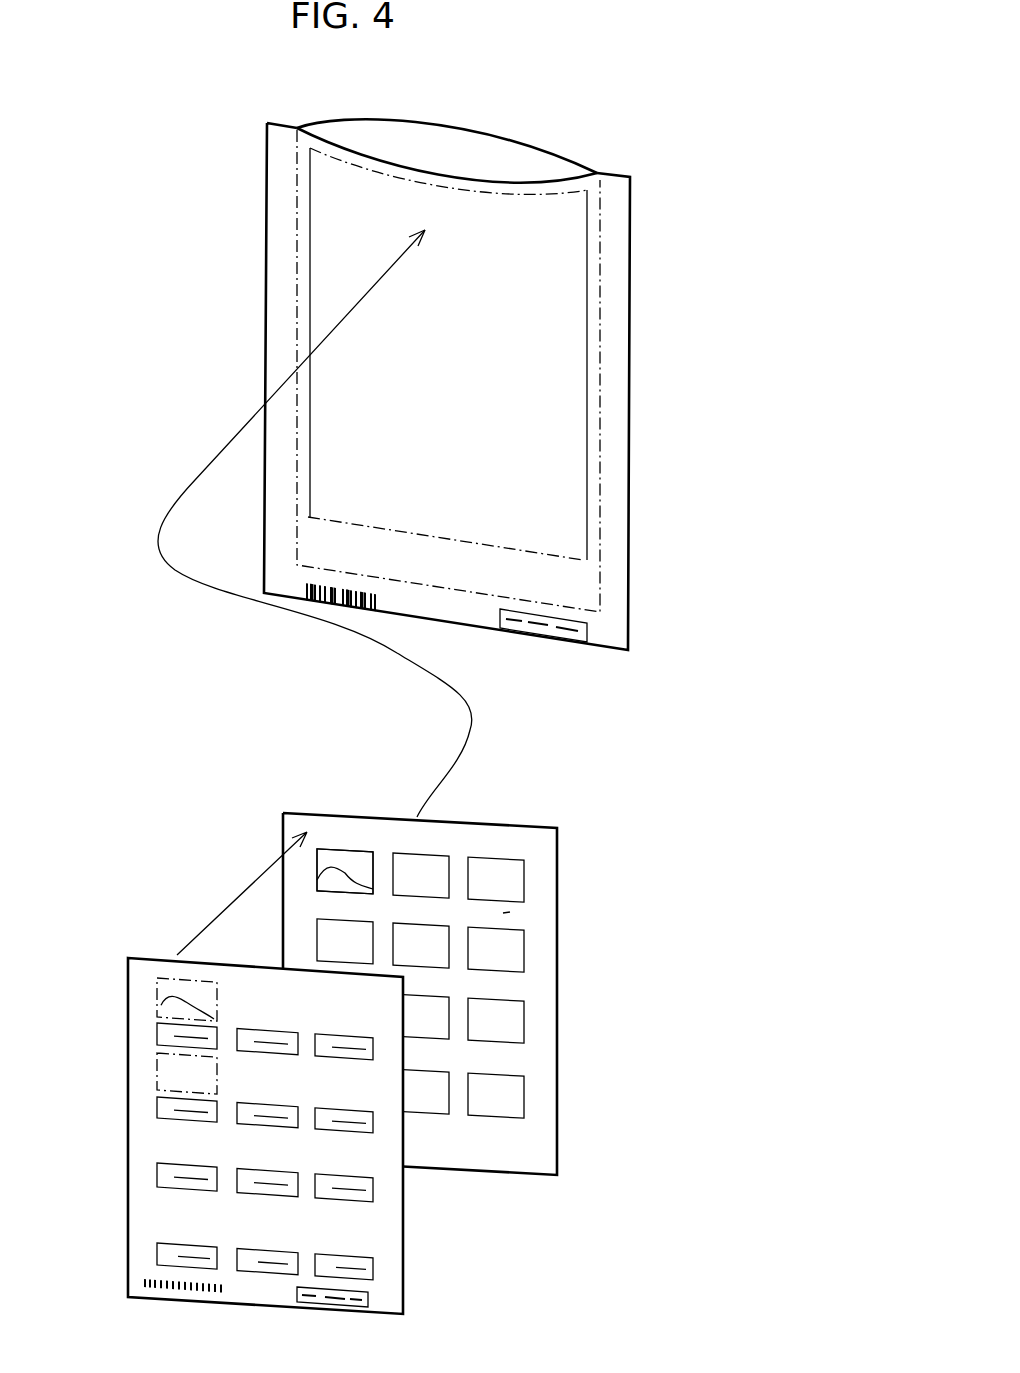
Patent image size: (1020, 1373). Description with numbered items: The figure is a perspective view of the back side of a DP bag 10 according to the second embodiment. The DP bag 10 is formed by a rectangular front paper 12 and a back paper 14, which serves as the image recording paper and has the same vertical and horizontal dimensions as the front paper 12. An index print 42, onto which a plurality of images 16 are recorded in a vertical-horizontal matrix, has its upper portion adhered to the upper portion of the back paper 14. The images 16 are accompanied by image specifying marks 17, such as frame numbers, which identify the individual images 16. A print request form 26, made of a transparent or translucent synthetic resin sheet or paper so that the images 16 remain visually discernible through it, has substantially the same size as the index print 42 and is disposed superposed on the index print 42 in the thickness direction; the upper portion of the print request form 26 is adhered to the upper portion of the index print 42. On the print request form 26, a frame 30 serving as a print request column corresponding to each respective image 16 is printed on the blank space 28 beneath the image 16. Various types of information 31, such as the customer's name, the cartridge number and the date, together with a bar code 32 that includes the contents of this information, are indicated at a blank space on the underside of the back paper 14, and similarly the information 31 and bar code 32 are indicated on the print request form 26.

The DP bag 10 is at (503, 127).
The front paper 12 is at (553, 163).
The back paper 14 is at (595, 206).
The index print 42 is at (583, 423).
The print request form 26 is at (128, 978).
The images 16 is at (335, 855).
The image specifying marks 17 is at (350, 851).
The blank space 28 is at (503, 913).
The frame 30 is at (160, 1028).
The information 31 is at (588, 637).
The bar code 32 is at (380, 598).